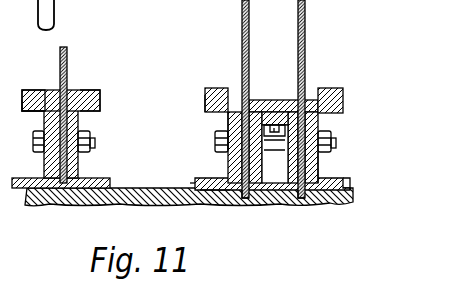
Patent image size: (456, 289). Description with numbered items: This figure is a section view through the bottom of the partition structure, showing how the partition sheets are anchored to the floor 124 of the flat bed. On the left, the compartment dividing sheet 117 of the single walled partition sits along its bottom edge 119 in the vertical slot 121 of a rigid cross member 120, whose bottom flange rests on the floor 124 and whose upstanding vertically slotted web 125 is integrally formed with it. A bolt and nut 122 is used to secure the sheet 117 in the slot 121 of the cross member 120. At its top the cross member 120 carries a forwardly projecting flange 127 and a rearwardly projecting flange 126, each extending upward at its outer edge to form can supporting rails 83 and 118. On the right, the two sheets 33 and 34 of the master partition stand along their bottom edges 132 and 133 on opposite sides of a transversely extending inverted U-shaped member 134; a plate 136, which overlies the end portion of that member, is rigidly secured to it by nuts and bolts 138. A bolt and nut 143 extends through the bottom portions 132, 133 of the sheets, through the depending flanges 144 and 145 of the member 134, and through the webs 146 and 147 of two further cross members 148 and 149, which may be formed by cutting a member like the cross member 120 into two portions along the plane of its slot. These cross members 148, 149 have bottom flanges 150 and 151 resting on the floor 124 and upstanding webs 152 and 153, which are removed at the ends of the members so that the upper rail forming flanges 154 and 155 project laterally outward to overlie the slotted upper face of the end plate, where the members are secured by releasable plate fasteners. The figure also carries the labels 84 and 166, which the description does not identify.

The sheet 33 is at (250, 36).
The sheet 34 is at (306, 36).
The can supporting rail 83 is at (96, 90).
The clamp block 84 is at (206, 90).
The compartment dividing sheet 117 is at (67, 60).
The can supporting rail 118 is at (28, 90).
The bottom edge 119 is at (36, 131).
The rigid cross member 120 is at (78, 166).
The vertical slot 121 is at (82, 130).
The bolt and nut 122 is at (95, 142).
The floor 124 is at (152, 186).
The upstanding vertically slotted web 125 is at (44, 166).
The rearwardly projecting flange 126 is at (23, 106).
The forwardly projecting flange 127 is at (100, 100).
The bottom edge 132 is at (270, 152).
The bottom edge 133 is at (318, 158).
The inverted U-shaped member 134 is at (310, 200).
The plate 136 is at (253, 100).
The nuts and bolts 138 is at (270, 125).
The bolt and nut 143 is at (331, 140).
The depending flange 144 is at (250, 198).
The depending flange 145 is at (296, 200).
The web 146 is at (228, 168).
The web 147 is at (322, 172).
The cross member 148 is at (215, 140).
The cross member 149 is at (305, 96).
The bottom flange 150 is at (210, 198).
The bottom flange 151 is at (350, 188).
The upstanding web 152 is at (228, 125).
The upstanding web 153 is at (318, 119).
The upper rail forming flange 154 is at (205, 102).
The upper rail forming flange 155 is at (330, 90).
The tube 166 is at (60, 27).